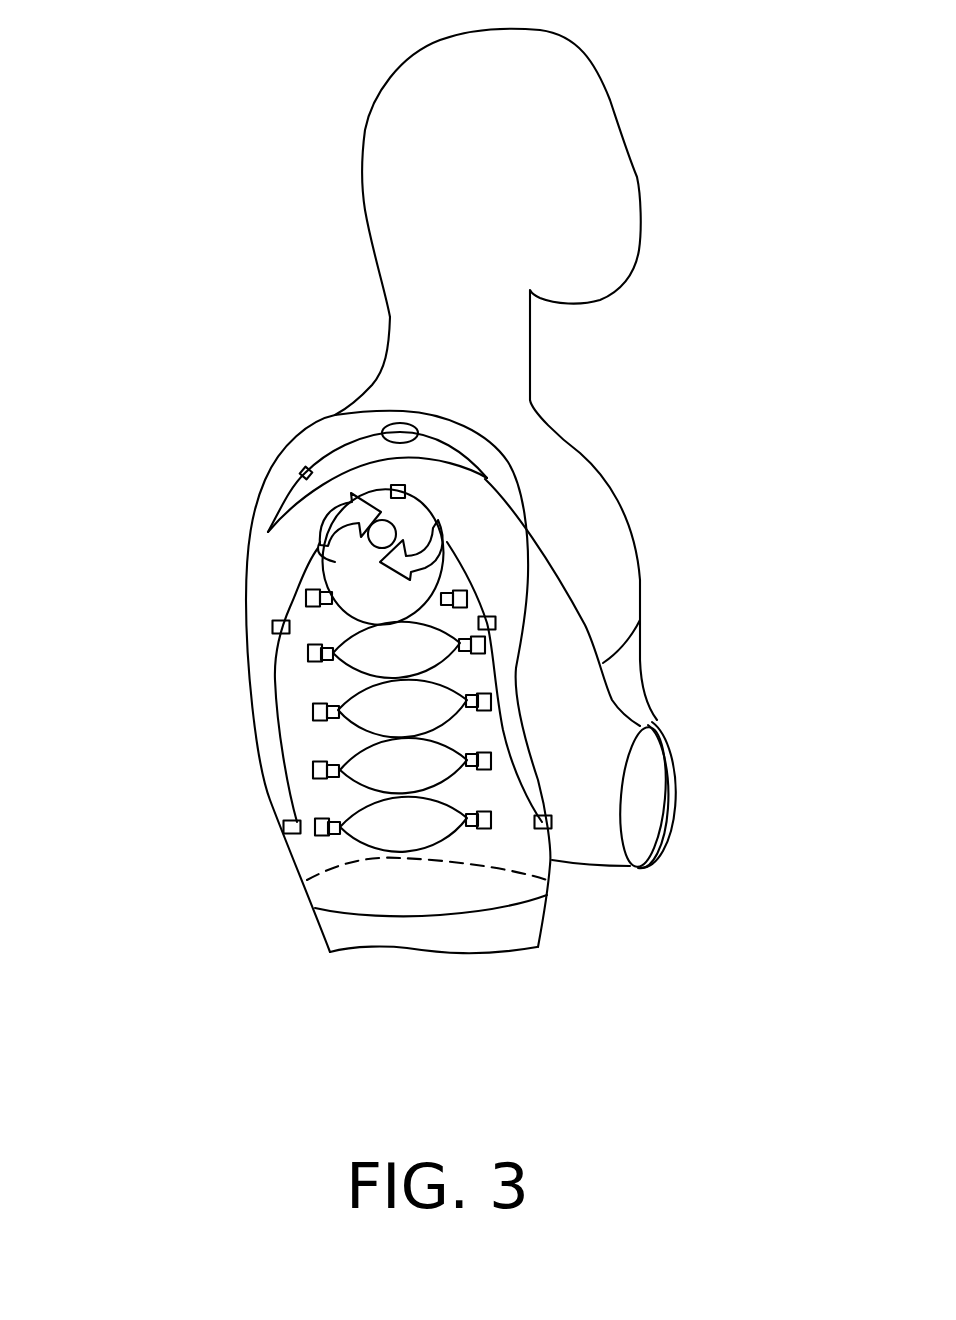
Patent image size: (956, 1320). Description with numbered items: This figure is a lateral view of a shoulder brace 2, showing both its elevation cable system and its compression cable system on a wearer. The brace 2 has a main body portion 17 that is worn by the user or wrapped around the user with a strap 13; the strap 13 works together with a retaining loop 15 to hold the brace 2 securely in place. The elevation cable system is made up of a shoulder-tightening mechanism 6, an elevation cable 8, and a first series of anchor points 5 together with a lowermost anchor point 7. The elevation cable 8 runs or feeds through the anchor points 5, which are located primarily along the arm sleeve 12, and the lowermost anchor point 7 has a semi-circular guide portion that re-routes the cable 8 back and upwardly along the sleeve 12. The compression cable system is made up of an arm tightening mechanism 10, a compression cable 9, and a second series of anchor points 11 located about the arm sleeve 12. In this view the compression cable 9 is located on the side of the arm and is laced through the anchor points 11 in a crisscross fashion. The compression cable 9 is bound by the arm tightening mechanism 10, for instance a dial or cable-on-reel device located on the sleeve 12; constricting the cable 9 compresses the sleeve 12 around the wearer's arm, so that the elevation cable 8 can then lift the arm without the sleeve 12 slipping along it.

The shoulder brace 2 is at (183, 505).
The first series of anchor points 5 is at (303, 468).
The shoulder-tightening mechanism 6 is at (386, 428).
The lowermost anchor point 7 is at (291, 831).
The elevation cable 8 is at (333, 447).
The compression cable 9 is at (412, 797).
The arm tightening mechanism 10 is at (397, 534).
The second series of anchor points 11 is at (298, 830).
The arm sleeve 12 is at (270, 572).
The strap 13 is at (633, 787).
The retaining loop 15 is at (660, 810).
The main body portion 17 is at (622, 727).